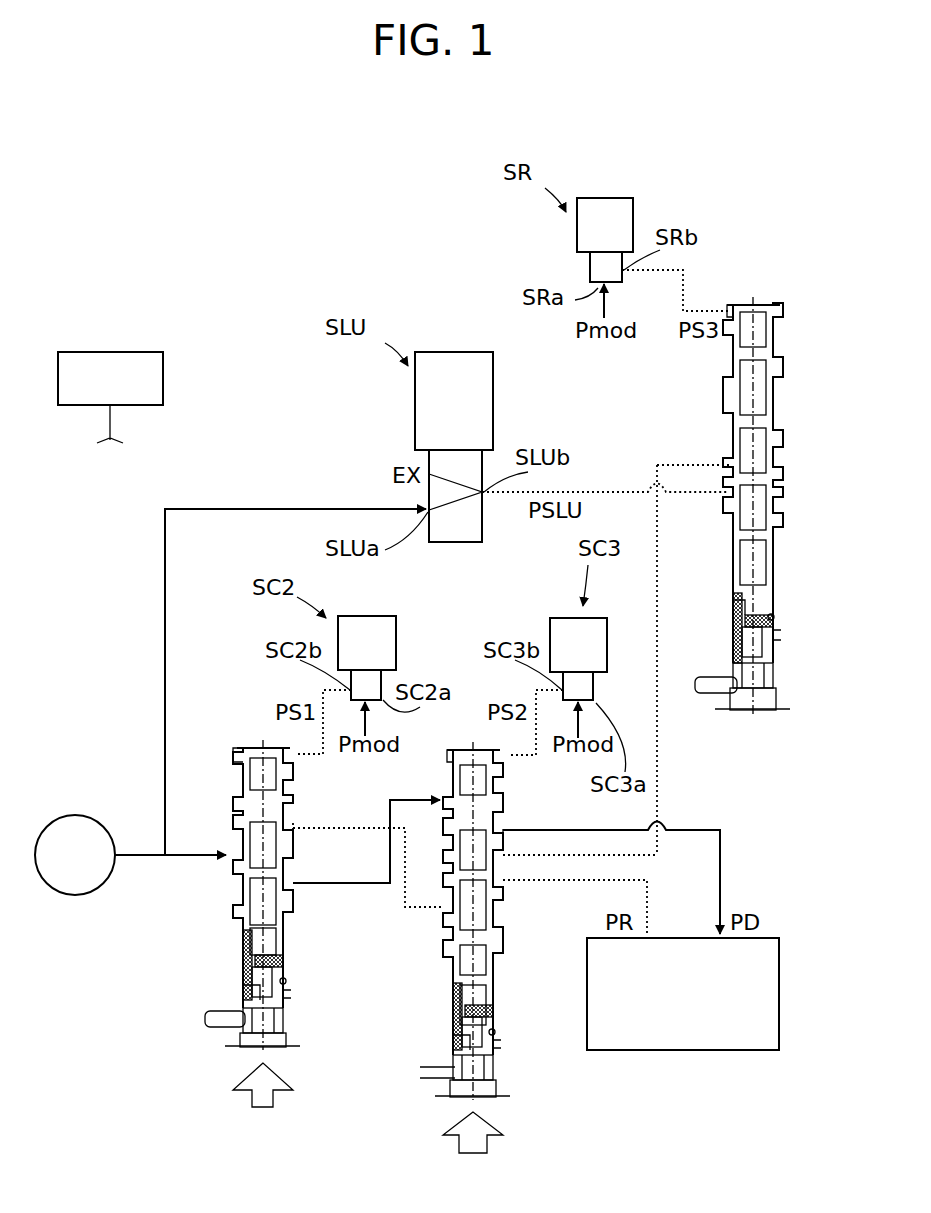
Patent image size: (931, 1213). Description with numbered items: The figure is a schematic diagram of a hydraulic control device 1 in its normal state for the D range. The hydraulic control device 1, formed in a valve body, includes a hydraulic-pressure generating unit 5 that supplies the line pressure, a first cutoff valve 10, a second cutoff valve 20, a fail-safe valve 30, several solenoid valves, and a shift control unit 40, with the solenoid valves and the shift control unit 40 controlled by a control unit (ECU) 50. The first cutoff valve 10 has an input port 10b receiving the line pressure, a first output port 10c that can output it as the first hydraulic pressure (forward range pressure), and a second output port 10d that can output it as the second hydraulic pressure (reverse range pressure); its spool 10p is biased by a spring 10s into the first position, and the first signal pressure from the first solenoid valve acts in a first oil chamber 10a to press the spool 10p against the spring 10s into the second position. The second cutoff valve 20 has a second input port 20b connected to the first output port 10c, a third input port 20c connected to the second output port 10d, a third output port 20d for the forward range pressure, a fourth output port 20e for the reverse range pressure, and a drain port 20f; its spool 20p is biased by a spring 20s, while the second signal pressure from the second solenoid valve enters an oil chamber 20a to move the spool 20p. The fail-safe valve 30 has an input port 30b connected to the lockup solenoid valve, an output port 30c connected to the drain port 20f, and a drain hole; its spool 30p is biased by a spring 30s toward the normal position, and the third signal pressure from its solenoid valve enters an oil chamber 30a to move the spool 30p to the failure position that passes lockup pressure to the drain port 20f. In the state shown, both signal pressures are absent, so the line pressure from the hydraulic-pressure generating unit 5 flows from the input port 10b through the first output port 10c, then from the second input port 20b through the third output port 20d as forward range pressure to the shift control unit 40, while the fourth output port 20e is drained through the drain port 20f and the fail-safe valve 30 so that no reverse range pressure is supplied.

The hydraulic control device 1 is at (160, 237).
The hydraulic-pressure generating unit 5 is at (78, 815).
The first cutoff valve 10 is at (272, 911).
The first oil chamber 10a is at (248, 752).
The input port 10b is at (232, 853).
The first output port 10c is at (298, 893).
The second output port 10d is at (300, 826).
The spool 10p is at (288, 980).
The spring 10s is at (240, 980).
The second cutoff valve 20 is at (527, 935).
The oil chamber 20a is at (462, 752).
The second input port 20b is at (446, 796).
The third input port 20c is at (444, 912).
The third output port 20d is at (506, 832).
The fourth output port 20e is at (506, 882).
The drain port 20f is at (508, 855).
The spool 20p is at (493, 1005).
The spring 20s is at (453, 1038).
The fail-safe valve 30 is at (732, 525).
The oil chamber 30a is at (752, 302).
The input port 30b is at (722, 505).
The output port 30c is at (722, 462).
The spool 30p is at (730, 598).
The spring 30s is at (778, 625).
The shift control unit 40 is at (683, 1050).
The control unit (ECU) 50 is at (165, 378).